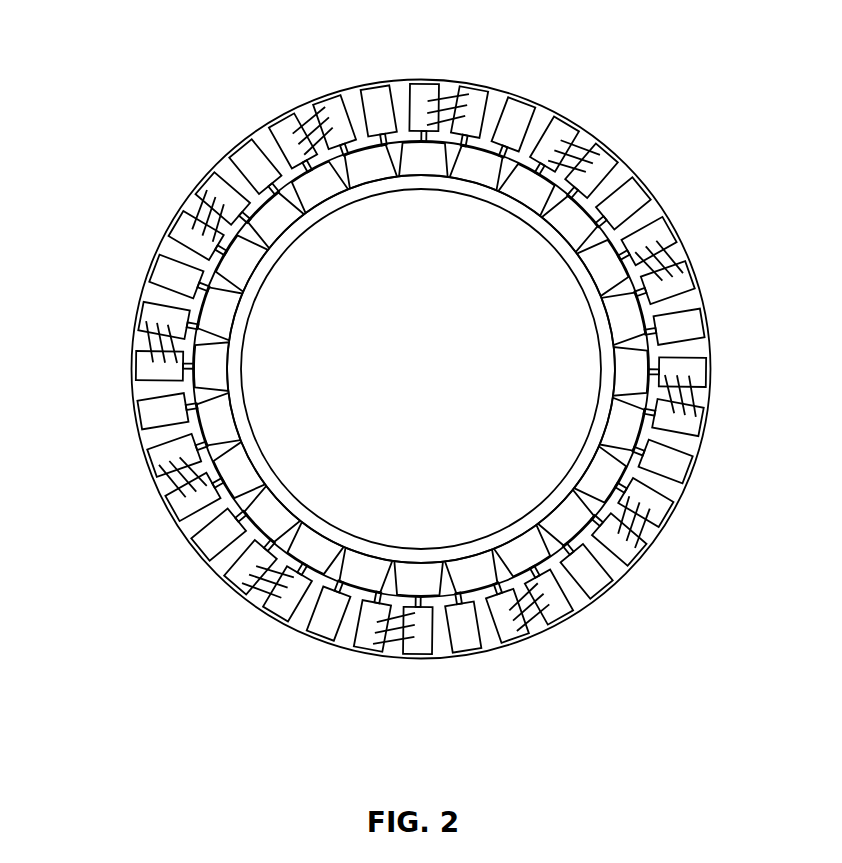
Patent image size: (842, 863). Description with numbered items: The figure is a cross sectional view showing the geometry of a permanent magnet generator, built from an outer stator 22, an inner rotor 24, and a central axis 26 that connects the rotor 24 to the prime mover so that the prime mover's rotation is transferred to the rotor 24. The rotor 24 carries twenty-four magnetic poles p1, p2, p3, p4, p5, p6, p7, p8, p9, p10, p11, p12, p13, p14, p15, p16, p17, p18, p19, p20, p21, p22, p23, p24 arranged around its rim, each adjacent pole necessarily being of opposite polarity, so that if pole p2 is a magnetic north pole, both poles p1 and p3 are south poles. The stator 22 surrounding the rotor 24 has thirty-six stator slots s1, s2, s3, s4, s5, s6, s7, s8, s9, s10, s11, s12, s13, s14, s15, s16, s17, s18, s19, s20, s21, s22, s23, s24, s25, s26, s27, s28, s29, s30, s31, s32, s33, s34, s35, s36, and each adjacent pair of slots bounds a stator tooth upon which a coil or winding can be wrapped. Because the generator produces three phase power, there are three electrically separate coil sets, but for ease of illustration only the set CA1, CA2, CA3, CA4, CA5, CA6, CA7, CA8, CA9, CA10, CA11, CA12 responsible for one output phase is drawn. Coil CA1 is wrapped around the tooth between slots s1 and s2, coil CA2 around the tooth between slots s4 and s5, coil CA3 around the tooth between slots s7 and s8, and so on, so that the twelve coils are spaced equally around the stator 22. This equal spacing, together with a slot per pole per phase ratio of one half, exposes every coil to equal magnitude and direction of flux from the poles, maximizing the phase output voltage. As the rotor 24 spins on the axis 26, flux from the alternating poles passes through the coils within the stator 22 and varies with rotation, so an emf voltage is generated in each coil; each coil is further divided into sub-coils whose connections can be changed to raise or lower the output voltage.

The stator 22 is at (220, 159).
The rotor 24 is at (284, 257).
The axis 26 is at (408, 380).
The stator slot s1 is at (421, 107).
The stator slot s2 is at (466, 111).
The stator slot s3 is at (511, 123).
The stator slot s4 is at (552, 142).
The stator slot s5 is at (589, 168).
The stator slot s6 is at (622, 201).
The stator slot s7 is at (648, 238).
The stator slot s8 is at (667, 279).
The stator slot s9 is at (679, 324).
The stator slot s10 is at (683, 369).
The stator slot s11 is at (679, 414).
The stator slot s12 is at (667, 459).
The stator slot s13 is at (648, 500).
The stator slot s14 is at (622, 537).
The stator slot s15 is at (589, 570).
The stator slot s16 is at (552, 596).
The stator slot s17 is at (511, 615).
The stator slot s18 is at (466, 627).
The stator slot s19 is at (421, 631).
The stator slot s20 is at (376, 627).
The stator slot s21 is at (331, 615).
The stator slot s22 is at (290, 596).
The stator slot s23 is at (253, 570).
The stator slot s24 is at (220, 537).
The stator slot s25 is at (194, 500).
The stator slot s26 is at (175, 459).
The stator slot s27 is at (163, 414).
The stator slot s28 is at (159, 369).
The stator slot s29 is at (163, 324).
The stator slot s30 is at (175, 279).
The stator slot s31 is at (194, 238).
The stator slot s32 is at (220, 201).
The stator slot s33 is at (253, 168).
The stator slot s34 is at (290, 142).
The stator slot s35 is at (331, 123).
The stator slot s36 is at (376, 111).
The magnetic pole p1 is at (421, 162).
The magnetic pole p2 is at (475, 169).
The magnetic pole p3 is at (524, 190).
The magnetic pole p4 is at (567, 223).
The magnetic pole p5 is at (600, 266).
The magnetic pole p6 is at (621, 315).
The magnetic pole p7 is at (628, 369).
The magnetic pole p8 is at (621, 423).
The magnetic pole p9 is at (600, 472).
The magnetic pole p10 is at (567, 515).
The magnetic pole p11 is at (524, 548).
The magnetic pole p12 is at (475, 569).
The magnetic pole p13 is at (421, 576).
The magnetic pole p14 is at (367, 569).
The magnetic pole p15 is at (318, 548).
The magnetic pole p16 is at (275, 515).
The magnetic pole p17 is at (242, 472).
The magnetic pole p18 is at (221, 423).
The magnetic pole p19 is at (214, 369).
The magnetic pole p20 is at (221, 315).
The magnetic pole p21 is at (242, 266).
The magnetic pole p22 is at (275, 223).
The magnetic pole p23 is at (317, 190).
The magnetic pole p24 is at (367, 169).
The coil CA1 is at (444, 108).
The coil CA2 is at (571, 154).
The coil CA3 is at (658, 258).
The coil CA4 is at (682, 392).
The coil CA5 is at (636, 519).
The coil CA6 is at (532, 606).
The coil CA7 is at (398, 630).
The coil CA8 is at (271, 584).
The coil CA9 is at (184, 480).
The coil CA10 is at (160, 346).
The coil CA11 is at (206, 219).
The coil CA12 is at (310, 132).